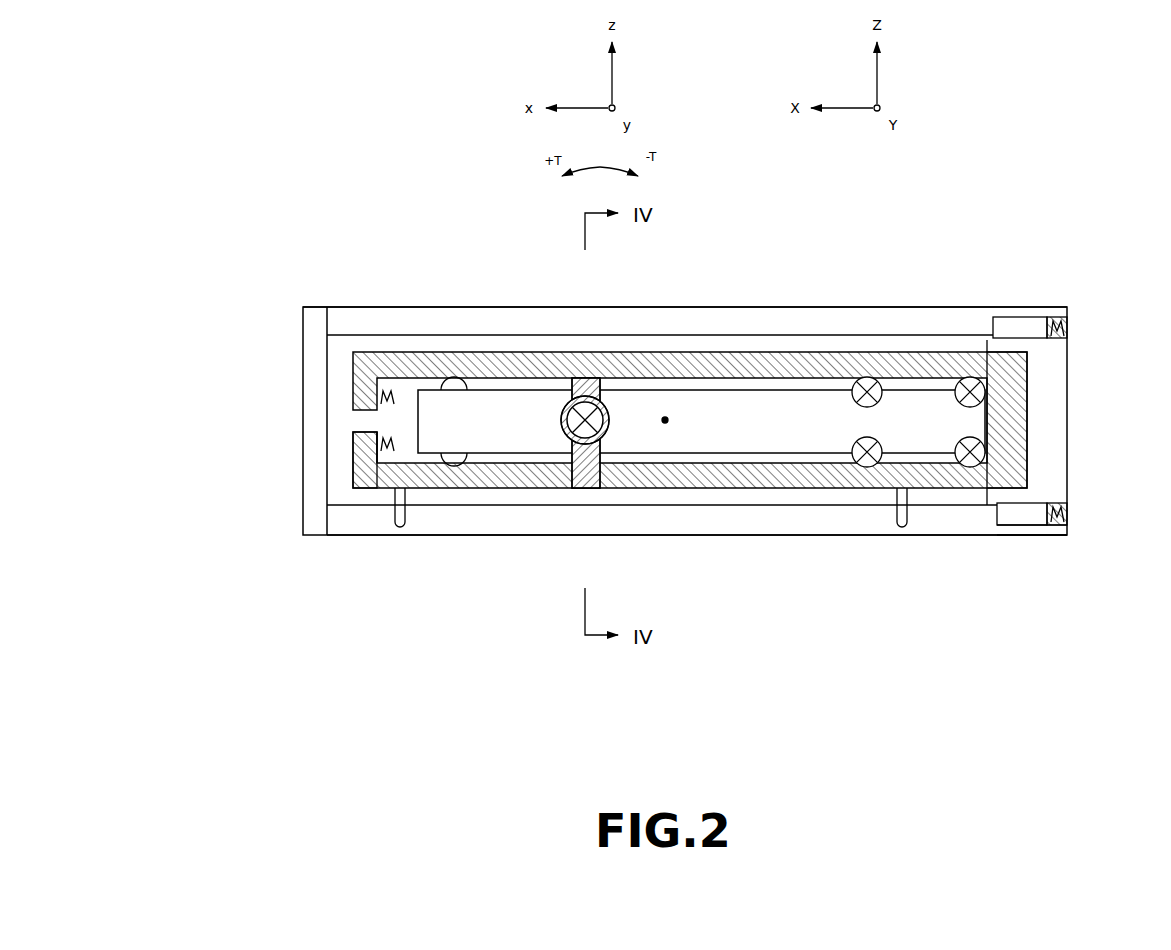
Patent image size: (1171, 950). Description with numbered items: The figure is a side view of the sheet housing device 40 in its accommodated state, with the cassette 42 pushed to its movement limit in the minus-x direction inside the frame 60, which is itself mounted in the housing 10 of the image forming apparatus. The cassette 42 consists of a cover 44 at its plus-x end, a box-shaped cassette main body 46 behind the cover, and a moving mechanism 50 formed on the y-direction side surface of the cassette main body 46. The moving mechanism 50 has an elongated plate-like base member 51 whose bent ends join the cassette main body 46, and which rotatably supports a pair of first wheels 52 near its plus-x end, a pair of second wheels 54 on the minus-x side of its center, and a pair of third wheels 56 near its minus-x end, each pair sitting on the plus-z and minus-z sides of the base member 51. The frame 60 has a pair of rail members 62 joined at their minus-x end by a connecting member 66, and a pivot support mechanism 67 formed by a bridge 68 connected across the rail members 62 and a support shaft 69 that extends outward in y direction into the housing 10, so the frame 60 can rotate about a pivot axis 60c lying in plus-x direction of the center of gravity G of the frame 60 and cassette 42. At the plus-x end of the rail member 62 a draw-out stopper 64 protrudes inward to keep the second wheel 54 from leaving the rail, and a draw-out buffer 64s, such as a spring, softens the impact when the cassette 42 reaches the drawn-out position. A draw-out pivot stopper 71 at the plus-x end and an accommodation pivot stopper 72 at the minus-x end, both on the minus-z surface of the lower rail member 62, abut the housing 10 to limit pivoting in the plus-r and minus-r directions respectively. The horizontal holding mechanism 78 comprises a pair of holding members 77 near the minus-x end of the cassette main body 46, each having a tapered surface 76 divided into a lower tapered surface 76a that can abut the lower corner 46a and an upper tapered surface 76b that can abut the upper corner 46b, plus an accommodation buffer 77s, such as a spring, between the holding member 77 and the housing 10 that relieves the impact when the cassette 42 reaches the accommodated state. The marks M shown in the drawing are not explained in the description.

The housing 10 is at (1067, 465).
The sheet housing device 40 is at (245, 158).
The cassette 42 is at (290, 425).
The cover 44 is at (322, 307).
The cassette main body 46 is at (405, 335).
The lower corner 46a is at (970, 505).
The upper corner 46b is at (980, 335).
The moving mechanism 50 is at (538, 378).
The base member 51 is at (707, 413).
The first wheel 52 is at (452, 456).
The second wheel 54 is at (855, 447).
The third wheel 56 is at (958, 447).
The frame 60 is at (757, 494).
The pivot axis 60c is at (607, 490).
The rail member 62 is at (462, 490).
The draw-out stopper 64 is at (355, 472).
The draw-out buffer 64s is at (378, 433).
The connecting member 66 is at (1027, 410).
The pivot support mechanism 67 is at (565, 590).
The bridge 68 is at (563, 458).
The support shaft 69 is at (561, 424).
The draw-out pivot stopper 71 is at (400, 528).
The accommodation pivot stopper 72 is at (893, 522).
The tapered surface 76 is at (975, 498).
The lower tapered surface 76a is at (1027, 506).
The upper tapered surface 76b is at (985, 338).
The holding member 77 is at (1009, 527).
The accommodation buffer 77s is at (1062, 535).
The horizontal holding mechanism 78 is at (1027, 545).
The center of gravity G is at (667, 424).
The magnet M is at (722, 421).